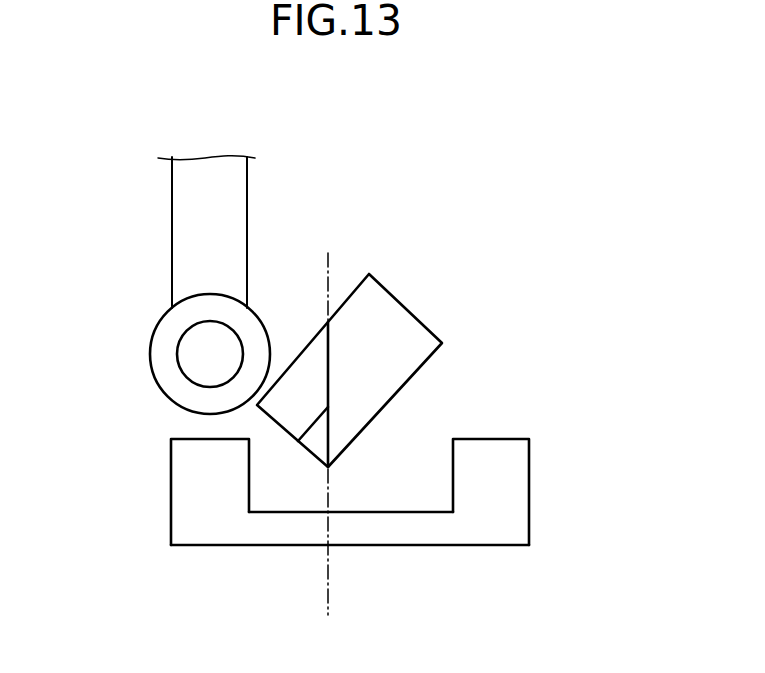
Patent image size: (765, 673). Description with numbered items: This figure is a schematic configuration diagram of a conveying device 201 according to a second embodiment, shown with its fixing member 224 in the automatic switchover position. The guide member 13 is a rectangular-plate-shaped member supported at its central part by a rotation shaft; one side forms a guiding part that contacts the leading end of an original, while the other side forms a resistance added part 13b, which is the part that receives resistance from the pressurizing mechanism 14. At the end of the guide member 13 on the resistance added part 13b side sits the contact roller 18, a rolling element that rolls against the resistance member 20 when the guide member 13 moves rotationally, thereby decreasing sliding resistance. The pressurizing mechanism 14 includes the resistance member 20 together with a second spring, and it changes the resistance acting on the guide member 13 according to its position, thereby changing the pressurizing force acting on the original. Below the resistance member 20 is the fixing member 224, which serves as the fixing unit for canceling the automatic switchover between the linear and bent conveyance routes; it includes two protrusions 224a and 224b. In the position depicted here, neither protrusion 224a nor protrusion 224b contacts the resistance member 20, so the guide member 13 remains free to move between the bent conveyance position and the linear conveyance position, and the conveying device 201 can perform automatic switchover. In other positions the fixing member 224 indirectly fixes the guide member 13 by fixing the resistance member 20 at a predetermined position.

The conveying device 201 is at (248, 98).
The guide member 13 is at (265, 232).
The resistance added part 13b is at (235, 197).
The contact roller 18 is at (150, 350).
The pressurizing mechanism 14 is at (372, 358).
The resistance member 20 is at (408, 302).
The fixing member 224 is at (338, 459).
The protrusion 224a is at (489, 455).
The protrusion 224b is at (185, 456).